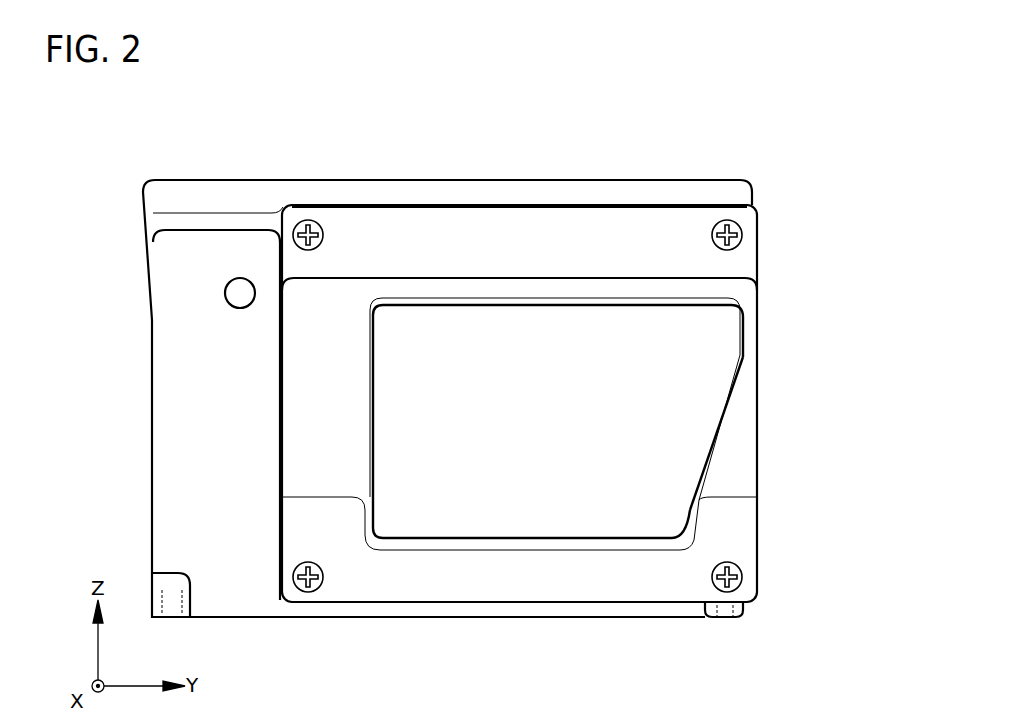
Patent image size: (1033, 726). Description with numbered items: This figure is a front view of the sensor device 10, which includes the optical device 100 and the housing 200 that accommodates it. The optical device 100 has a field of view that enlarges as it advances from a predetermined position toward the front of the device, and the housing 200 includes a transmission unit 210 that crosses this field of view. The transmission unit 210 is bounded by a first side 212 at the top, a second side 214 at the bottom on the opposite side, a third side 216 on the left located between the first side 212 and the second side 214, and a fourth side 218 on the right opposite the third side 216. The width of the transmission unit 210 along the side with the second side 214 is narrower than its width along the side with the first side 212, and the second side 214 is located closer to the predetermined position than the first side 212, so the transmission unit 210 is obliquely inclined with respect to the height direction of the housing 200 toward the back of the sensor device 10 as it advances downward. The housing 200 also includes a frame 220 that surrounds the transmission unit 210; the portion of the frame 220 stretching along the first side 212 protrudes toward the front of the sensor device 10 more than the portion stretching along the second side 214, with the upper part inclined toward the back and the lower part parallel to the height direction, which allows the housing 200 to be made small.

The sensor device 10 is at (750, 97).
The optical device 100 is at (208, 253).
The housing 200 is at (447, 366).
The transmission unit 210 is at (463, 408).
The first side 212 is at (645, 303).
The second side 214 is at (420, 540).
The third side 216 is at (372, 444).
The fourth side 218 is at (717, 457).
The frame 220 is at (737, 432).